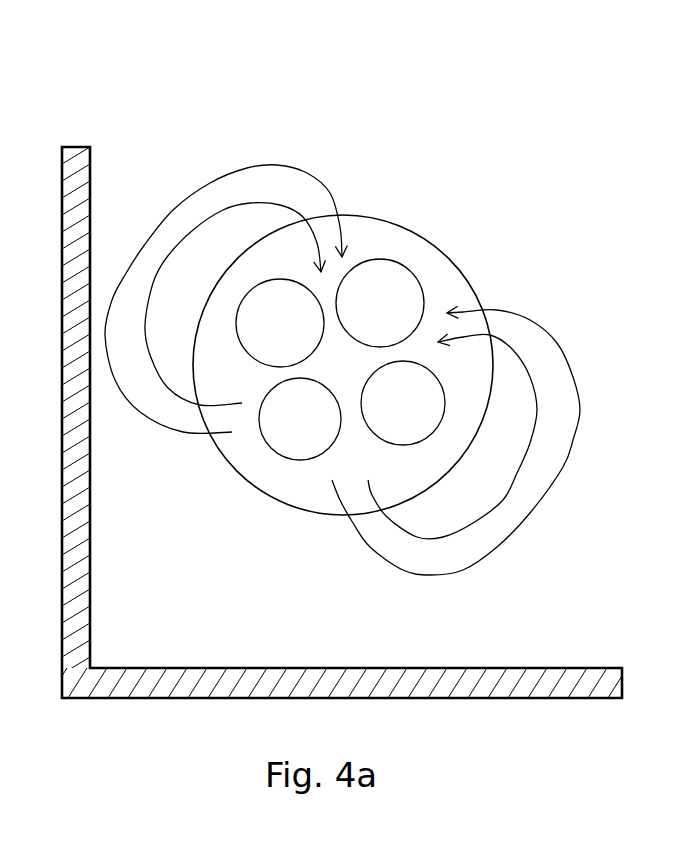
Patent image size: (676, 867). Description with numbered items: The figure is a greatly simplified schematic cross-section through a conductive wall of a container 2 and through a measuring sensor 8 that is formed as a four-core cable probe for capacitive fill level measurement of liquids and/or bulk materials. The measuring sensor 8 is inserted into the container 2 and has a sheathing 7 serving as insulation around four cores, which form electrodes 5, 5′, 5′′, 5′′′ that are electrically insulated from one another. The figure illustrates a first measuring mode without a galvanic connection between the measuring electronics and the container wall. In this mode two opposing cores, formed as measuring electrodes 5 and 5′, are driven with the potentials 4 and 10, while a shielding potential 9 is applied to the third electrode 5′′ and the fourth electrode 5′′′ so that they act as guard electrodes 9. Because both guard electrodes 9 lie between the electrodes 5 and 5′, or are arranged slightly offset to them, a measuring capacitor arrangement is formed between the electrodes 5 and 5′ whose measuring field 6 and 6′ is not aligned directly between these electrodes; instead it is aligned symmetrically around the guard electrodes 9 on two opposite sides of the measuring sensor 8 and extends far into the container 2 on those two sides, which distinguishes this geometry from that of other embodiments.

The container 2 is at (505, 668).
The potential 4 is at (397, 285).
The electrode 5 is at (380, 303).
The electrode 5′ is at (314, 403).
The electrode 5′′ is at (295, 309).
The electrode 5′′′ is at (425, 397).
The measuring field 6 is at (230, 287).
The measuring field 6′ is at (617, 360).
The sheathing 7 is at (484, 301).
The measuring sensor 8 is at (472, 228).
The guard electrode / shielding potential 9 is at (258, 315).
The potential 10 is at (280, 427).